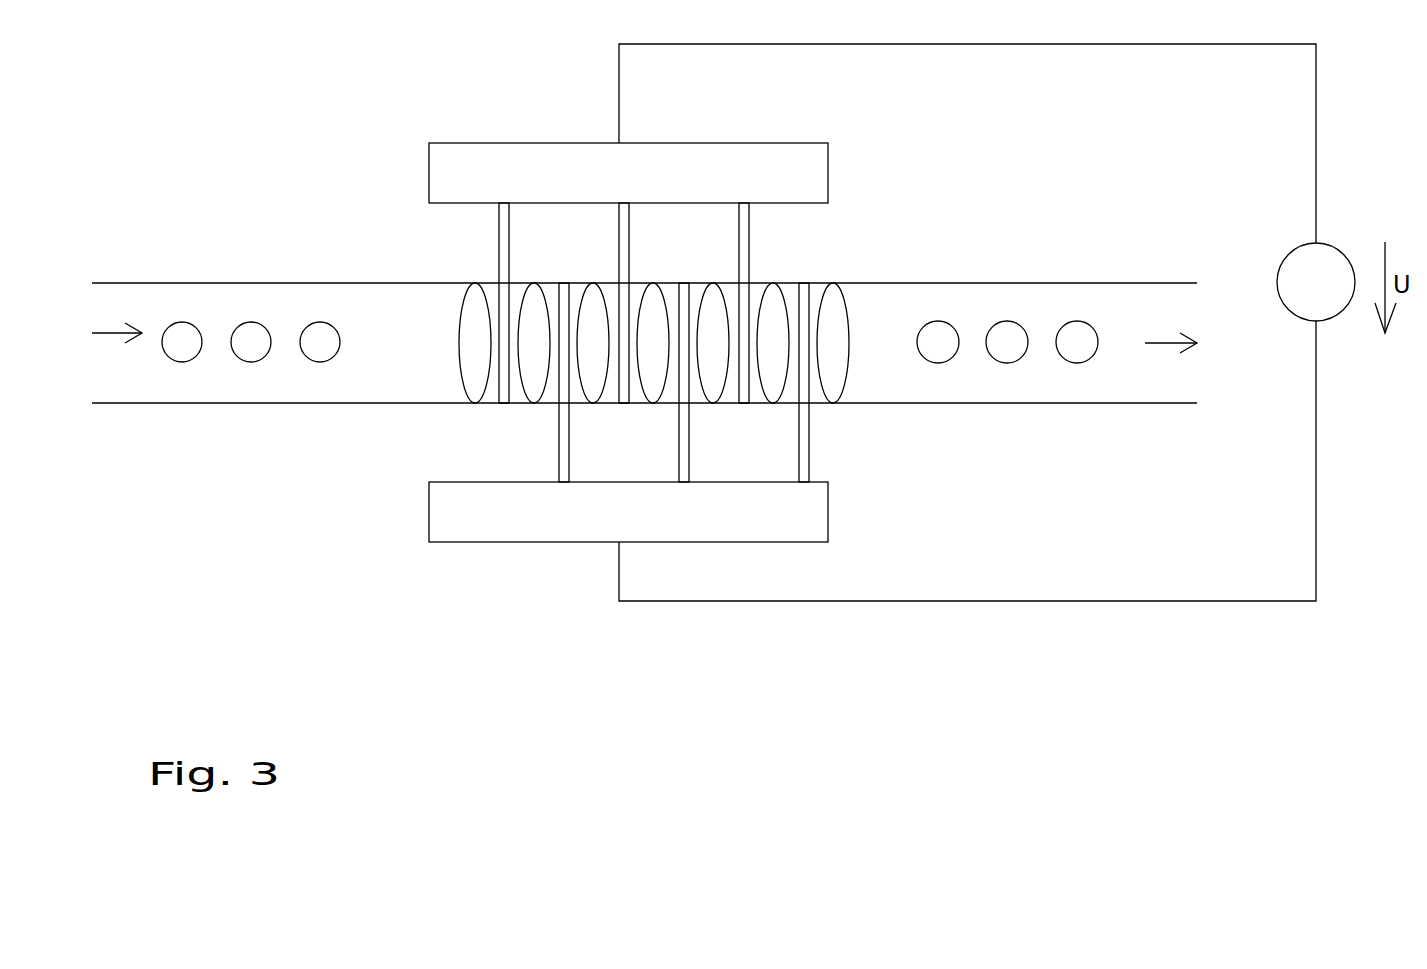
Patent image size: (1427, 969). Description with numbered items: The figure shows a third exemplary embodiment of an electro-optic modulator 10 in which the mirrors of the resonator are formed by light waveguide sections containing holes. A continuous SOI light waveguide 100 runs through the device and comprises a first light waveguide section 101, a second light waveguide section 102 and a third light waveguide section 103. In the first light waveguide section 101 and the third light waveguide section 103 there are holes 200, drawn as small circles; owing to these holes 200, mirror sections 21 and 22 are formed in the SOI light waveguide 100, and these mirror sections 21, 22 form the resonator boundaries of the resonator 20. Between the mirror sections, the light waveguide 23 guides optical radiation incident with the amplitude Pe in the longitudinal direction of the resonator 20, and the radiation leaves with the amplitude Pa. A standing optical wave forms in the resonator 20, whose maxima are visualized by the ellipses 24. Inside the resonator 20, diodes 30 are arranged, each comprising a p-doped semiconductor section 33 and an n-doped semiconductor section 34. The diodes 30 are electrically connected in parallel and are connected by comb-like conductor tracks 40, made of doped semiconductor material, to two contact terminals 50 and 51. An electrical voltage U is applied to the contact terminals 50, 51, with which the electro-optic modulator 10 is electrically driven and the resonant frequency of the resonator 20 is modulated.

The electro-optic modulator 10 is at (400, 133).
The resonator 20 is at (848, 288).
The mirror section 21 is at (177, 390).
The mirror section 22 is at (1002, 385).
The light waveguide 23 is at (455, 288).
The maxima of the standing optical wave 24 is at (465, 377).
The diodes 30 is at (581, 324).
The p-doped semiconductor section 33 is at (500, 380).
The n-doped semiconductor section 34 is at (565, 378).
The comb-like conductor tracks 40 is at (651, 342).
The contact terminal 50 is at (501, 154).
The contact terminal 51 is at (520, 532).
The SOI light waveguide 100 is at (273, 302).
The first light waveguide section 101 is at (213, 302).
The second light waveguide section 102 is at (402, 324).
The third light waveguide section 103 is at (1017, 303).
The holes 200 is at (251, 345).